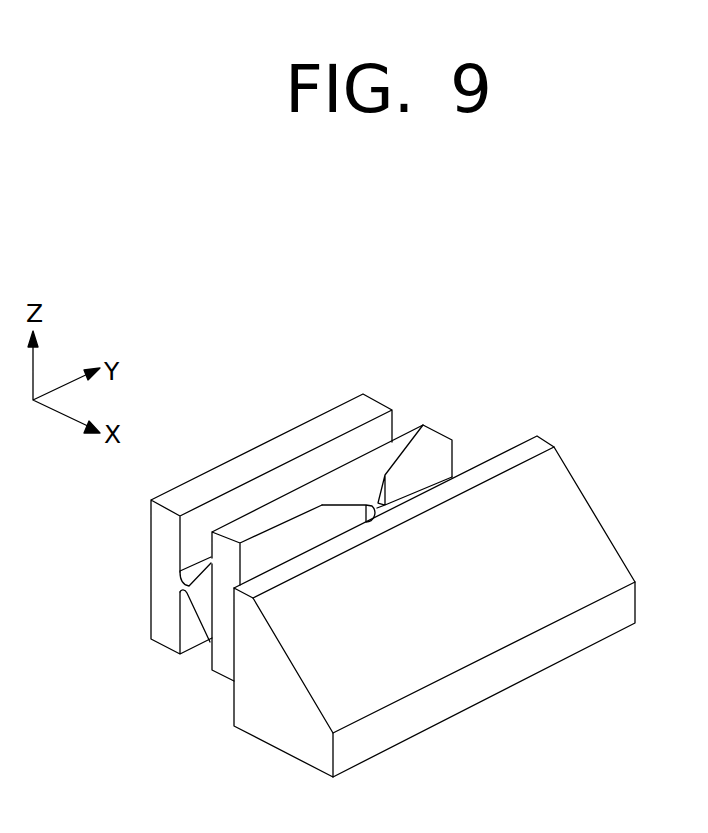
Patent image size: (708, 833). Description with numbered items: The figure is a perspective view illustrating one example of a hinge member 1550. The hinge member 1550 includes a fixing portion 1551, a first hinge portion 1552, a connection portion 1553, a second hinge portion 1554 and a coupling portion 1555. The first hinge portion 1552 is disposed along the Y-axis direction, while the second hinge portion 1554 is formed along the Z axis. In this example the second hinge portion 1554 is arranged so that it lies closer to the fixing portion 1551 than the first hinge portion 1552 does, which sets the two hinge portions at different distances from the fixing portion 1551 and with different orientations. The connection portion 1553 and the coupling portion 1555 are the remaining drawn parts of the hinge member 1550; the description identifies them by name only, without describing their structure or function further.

The hinge member 1550 is at (474, 366).
The fixing portion 1551 is at (490, 643).
The first hinge portion 1552 is at (188, 592).
The connection portion 1553 is at (261, 520).
The second hinge portion 1554 is at (385, 503).
The coupling portion 1555 is at (158, 538).